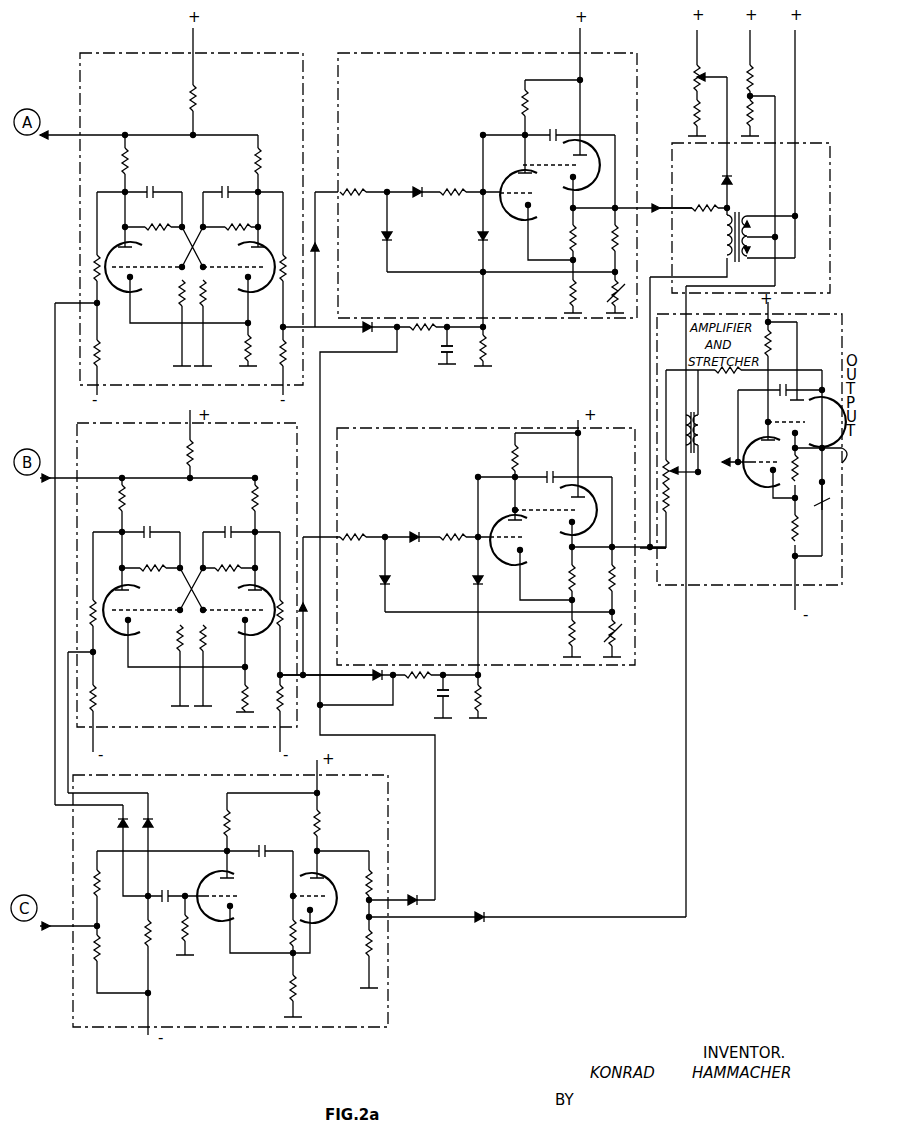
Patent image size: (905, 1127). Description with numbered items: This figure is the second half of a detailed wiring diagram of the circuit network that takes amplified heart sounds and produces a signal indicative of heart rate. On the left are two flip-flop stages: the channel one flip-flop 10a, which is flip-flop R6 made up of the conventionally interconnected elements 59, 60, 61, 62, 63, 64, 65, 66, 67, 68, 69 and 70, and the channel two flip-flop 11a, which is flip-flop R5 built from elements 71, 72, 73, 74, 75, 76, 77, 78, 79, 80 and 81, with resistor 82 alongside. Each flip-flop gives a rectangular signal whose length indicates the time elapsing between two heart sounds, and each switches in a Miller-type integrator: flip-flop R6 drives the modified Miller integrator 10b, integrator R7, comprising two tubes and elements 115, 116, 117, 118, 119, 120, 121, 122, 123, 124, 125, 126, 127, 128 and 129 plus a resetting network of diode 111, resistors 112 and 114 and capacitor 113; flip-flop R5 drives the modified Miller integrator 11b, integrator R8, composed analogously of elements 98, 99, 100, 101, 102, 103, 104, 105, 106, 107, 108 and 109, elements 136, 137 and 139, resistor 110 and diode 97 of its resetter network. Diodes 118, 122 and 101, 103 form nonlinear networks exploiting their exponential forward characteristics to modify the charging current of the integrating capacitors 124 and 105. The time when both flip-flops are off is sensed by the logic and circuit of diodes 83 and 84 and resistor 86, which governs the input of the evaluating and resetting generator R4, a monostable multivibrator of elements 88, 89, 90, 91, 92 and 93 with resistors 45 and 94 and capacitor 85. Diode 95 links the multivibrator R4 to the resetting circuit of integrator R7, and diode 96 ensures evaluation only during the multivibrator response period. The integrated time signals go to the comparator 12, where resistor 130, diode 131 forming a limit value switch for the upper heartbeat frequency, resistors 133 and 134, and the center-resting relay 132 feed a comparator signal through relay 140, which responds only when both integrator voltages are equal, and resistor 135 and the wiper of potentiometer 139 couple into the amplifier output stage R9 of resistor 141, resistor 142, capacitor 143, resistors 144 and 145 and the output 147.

The channel 1 flip-flop 10a is at (304, 60).
The modified Miller integrator (channel 1) 10b is at (639, 60).
The channel 2 flip-flop 11a is at (272, 462).
The modified Miller integrator (channel 2) 11b is at (631, 433).
The comparator 12 is at (830, 144).
The 100K ohm resistor 45 is at (108, 915).
The 10K ohm resistor 59 is at (197, 101).
The 5K ohm resistor 60 is at (128, 163).
The 5K ohm resistor 61 is at (254, 163).
The 20 pf capacitor 62 is at (155, 189).
The 20 pf capacitor 63 is at (225, 186).
The 800K ohm resistor 64 is at (153, 216).
The 800K ohm resistor 65 is at (230, 216).
The 100K ohm resistor 66 is at (179, 297).
The 100K ohm resistor 67 is at (207, 297).
The 1.2K ohm resistor 68 is at (245, 349).
The 40K ohm resistor 69 is at (106, 279).
The 50K ohm resistor 70 is at (108, 348).
The 10K ohm resistor 71 is at (193, 455).
The 5K ohm resistor 72 is at (125, 498).
The 5K ohm resistor 73 is at (258, 498).
The 20 pf capacitor 74 is at (152, 528).
The 20 pf capacitor 75 is at (228, 526).
The 800K ohm resistor 76 is at (151, 557).
The 800K ohm resistor 77 is at (229, 557).
The 40K ohm resistor 78 is at (90, 612).
The 100K ohm resistor 79 is at (177, 638).
The 100K ohm resistor 80 is at (206, 638).
The 1.2K ohm resistor 81 is at (242, 698).
The 50K ohm resistor 82 is at (96, 706).
The Ge-diode 83 is at (117, 822).
The Ge-diode 84 is at (154, 822).
The 500 pf capacitor 85 is at (176, 884).
The 200K ohm resistor 86 is at (136, 933).
The 50K ohm resistor 88 is at (230, 823).
The 5K ohm resistor 89 is at (188, 928).
The 100 nf capacitor 90 is at (265, 846).
The 1M ohm resistor 91 is at (290, 933).
The 2.5K ohm resistor 92 is at (290, 988).
The 20K ohm resistor 93 is at (366, 883).
The 50K ohm resistor 94 is at (366, 943).
The Ge-diode 95 is at (413, 894).
The Ge-diode 96 is at (480, 911).
The Ge-diode 97 is at (378, 681).
The 30K ohm resistor 98 is at (276, 700).
The 25K ohm resistor 99 is at (277, 590).
The 100K ohm resistor 100 is at (354, 527).
The Si-diode 101 is at (415, 531).
The 5M ohm resistor 102 is at (456, 527).
The Si-diode 103 is at (388, 575).
The Si-diode 104 is at (481, 575).
The 1 mf integrating capacitor 105 is at (558, 466).
The 100K ohm resistor 106 is at (609, 578).
The 2K ohm potentiometer 107 is at (609, 633).
The 100K ohm resistor 108 is at (481, 698).
The 250 pf capacitor 109 is at (449, 697).
The 1K ohm resistor 110 is at (417, 688).
The Ge-diode 111 is at (368, 333).
The 1K ohm resistor 112 is at (419, 339).
The 250 pf capacitor 113 is at (458, 348).
The 100K ohm resistor 114 is at (486, 346).
The 2K ohm potentiometer 115 is at (612, 293).
The 100K ohm resistor 116 is at (612, 238).
The Si-diode 117 is at (486, 231).
The Si-diode 118 is at (390, 231).
The 30K ohm resistor 119 is at (269, 348).
The 25K ohm resistor 120 is at (282, 284).
The 100K ohm resistor 121 is at (354, 182).
The Si-diode 122 is at (418, 186).
The 5M ohm resistor 123 is at (454, 182).
The 1 mf integrating capacitor 124 is at (561, 124).
The 100K ohm resistor 125 is at (510, 102).
The 20K ohm resistor 126 is at (570, 238).
The 2.5K ohm resistor 127 is at (570, 293).
The 50K ohm potentiometer 128 is at (694, 78).
The 50K ohm resistor 129 is at (694, 113).
The 20K ohm resistor 130 is at (710, 198).
The diode 131 is at (733, 180).
The relay 132 is at (724, 238).
The 20K ohm resistor 133 is at (753, 78).
The 50K ohm resistor 134 is at (765, 115).
The 100K ohm resistor 135 is at (512, 458).
The 20K ohm resistor 136 is at (569, 578).
The 2.5K ohm resistor 137 is at (569, 633).
The 10K ohm potentiometer 139 is at (694, 478).
The relay 140 is at (698, 430).
The 100K ohm resistor 141 is at (771, 343).
The 5K ohm resistor 142 is at (725, 376).
The 1 mf capacitor 143 is at (788, 386).
The 20K ohm resistor 144 is at (810, 468).
The 2.5K ohm resistor 145 is at (792, 535).
The output 147 is at (818, 502).
The evaluating and resetting generator R4 is at (211, 962).
The flip-flop stage R5 is at (156, 658).
The flip-flop stage R6 is at (152, 325).
The Miller integrator R7 is at (511, 127).
The Miller integrator R8 is at (472, 500).
The amplifier output stage R9 is at (763, 474).